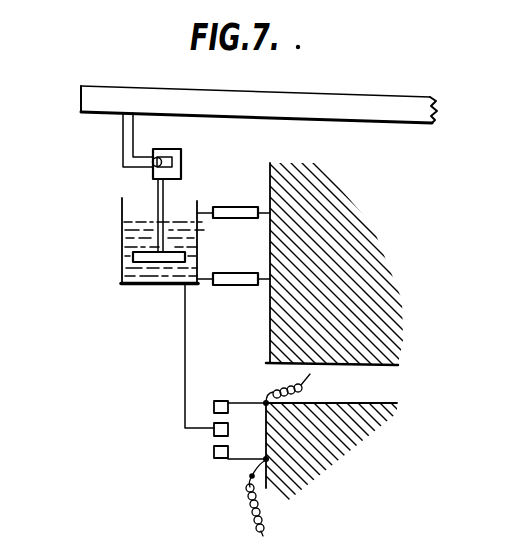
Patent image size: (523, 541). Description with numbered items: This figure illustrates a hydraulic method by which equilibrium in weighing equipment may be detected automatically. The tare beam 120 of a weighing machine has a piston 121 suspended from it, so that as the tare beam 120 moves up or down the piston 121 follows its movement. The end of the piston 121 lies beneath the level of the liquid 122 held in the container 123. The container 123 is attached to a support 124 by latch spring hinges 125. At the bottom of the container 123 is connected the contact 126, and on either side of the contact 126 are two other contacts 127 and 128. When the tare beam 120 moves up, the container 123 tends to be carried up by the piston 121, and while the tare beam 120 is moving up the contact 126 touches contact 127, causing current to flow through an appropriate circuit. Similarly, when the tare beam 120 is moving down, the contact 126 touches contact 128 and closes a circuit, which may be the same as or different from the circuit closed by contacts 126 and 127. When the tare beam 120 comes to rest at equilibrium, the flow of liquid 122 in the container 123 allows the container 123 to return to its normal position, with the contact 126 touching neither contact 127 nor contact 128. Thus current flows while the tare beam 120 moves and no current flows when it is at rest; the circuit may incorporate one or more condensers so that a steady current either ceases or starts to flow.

The tare beam 120 is at (88, 100).
The piston 121 is at (159, 188).
The liquid 122 is at (128, 265).
The container 123 is at (152, 284).
The support 124 is at (383, 346).
The latch spring hinges 125 is at (242, 220).
The contact 126 is at (183, 420).
The contact 127 is at (237, 381).
The contact 128 is at (221, 458).